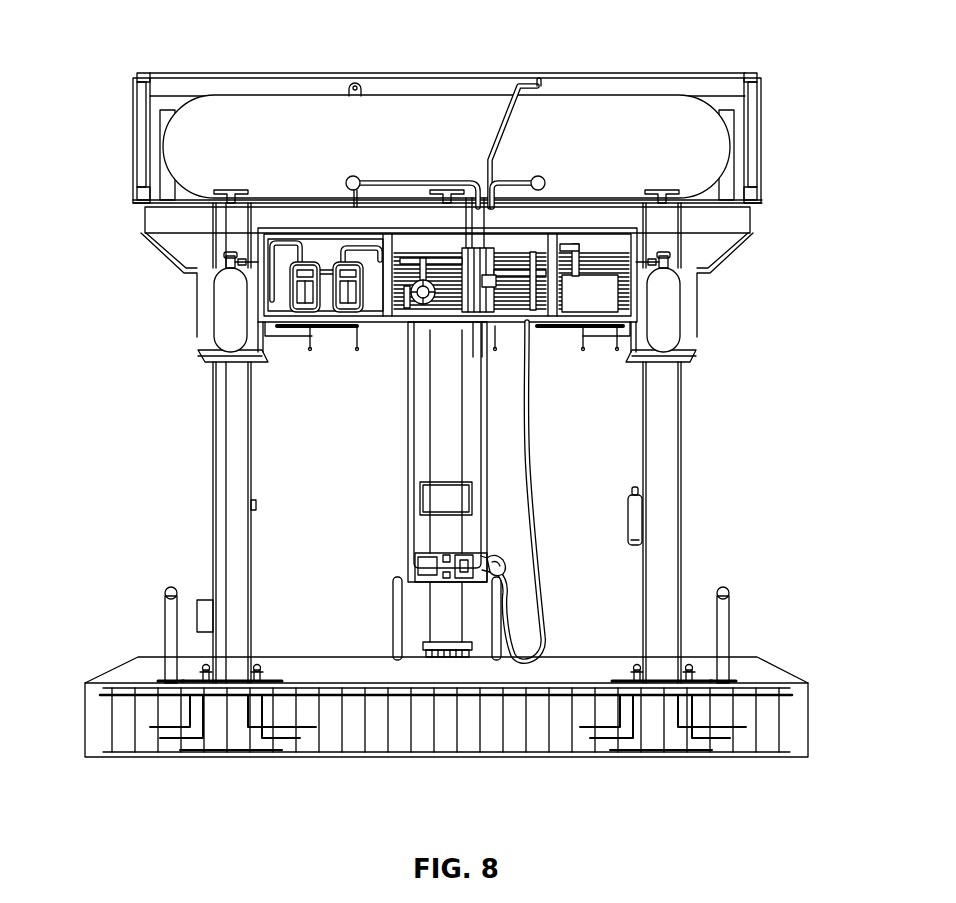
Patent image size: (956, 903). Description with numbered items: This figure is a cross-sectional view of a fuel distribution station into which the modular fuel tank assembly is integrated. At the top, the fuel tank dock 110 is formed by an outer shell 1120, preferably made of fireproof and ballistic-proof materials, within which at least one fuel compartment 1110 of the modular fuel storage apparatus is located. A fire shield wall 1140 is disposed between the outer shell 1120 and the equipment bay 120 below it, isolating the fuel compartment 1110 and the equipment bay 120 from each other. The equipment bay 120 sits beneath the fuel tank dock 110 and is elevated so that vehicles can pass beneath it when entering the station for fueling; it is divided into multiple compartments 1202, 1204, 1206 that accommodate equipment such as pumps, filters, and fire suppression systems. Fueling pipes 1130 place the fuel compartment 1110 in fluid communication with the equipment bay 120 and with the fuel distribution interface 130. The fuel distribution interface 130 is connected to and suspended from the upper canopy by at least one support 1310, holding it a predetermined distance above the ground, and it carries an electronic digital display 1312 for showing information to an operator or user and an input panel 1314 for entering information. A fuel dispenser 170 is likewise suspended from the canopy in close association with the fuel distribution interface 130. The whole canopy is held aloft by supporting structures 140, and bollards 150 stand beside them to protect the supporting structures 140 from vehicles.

The fuel tank dock 110 is at (131, 100).
The fuel compartment 1110 is at (255, 110).
The outer shell 1120 is at (763, 103).
The fueling pipes 1130 is at (465, 188).
The fire shield wall 1140 is at (740, 224).
The equipment bay 120 is at (197, 275).
The compartment 1202 is at (277, 272).
The compartment 1204 is at (455, 312).
The compartment 1206 is at (623, 293).
The fuel distribution interface 130 is at (412, 445).
The electronic digital display 1312 is at (420, 492).
The support 1310 is at (487, 462).
The fuel dispenser 170 is at (507, 565).
The input panel 1314 is at (474, 571).
The supporting structures 140 is at (215, 575).
The bollards 150 is at (165, 620).